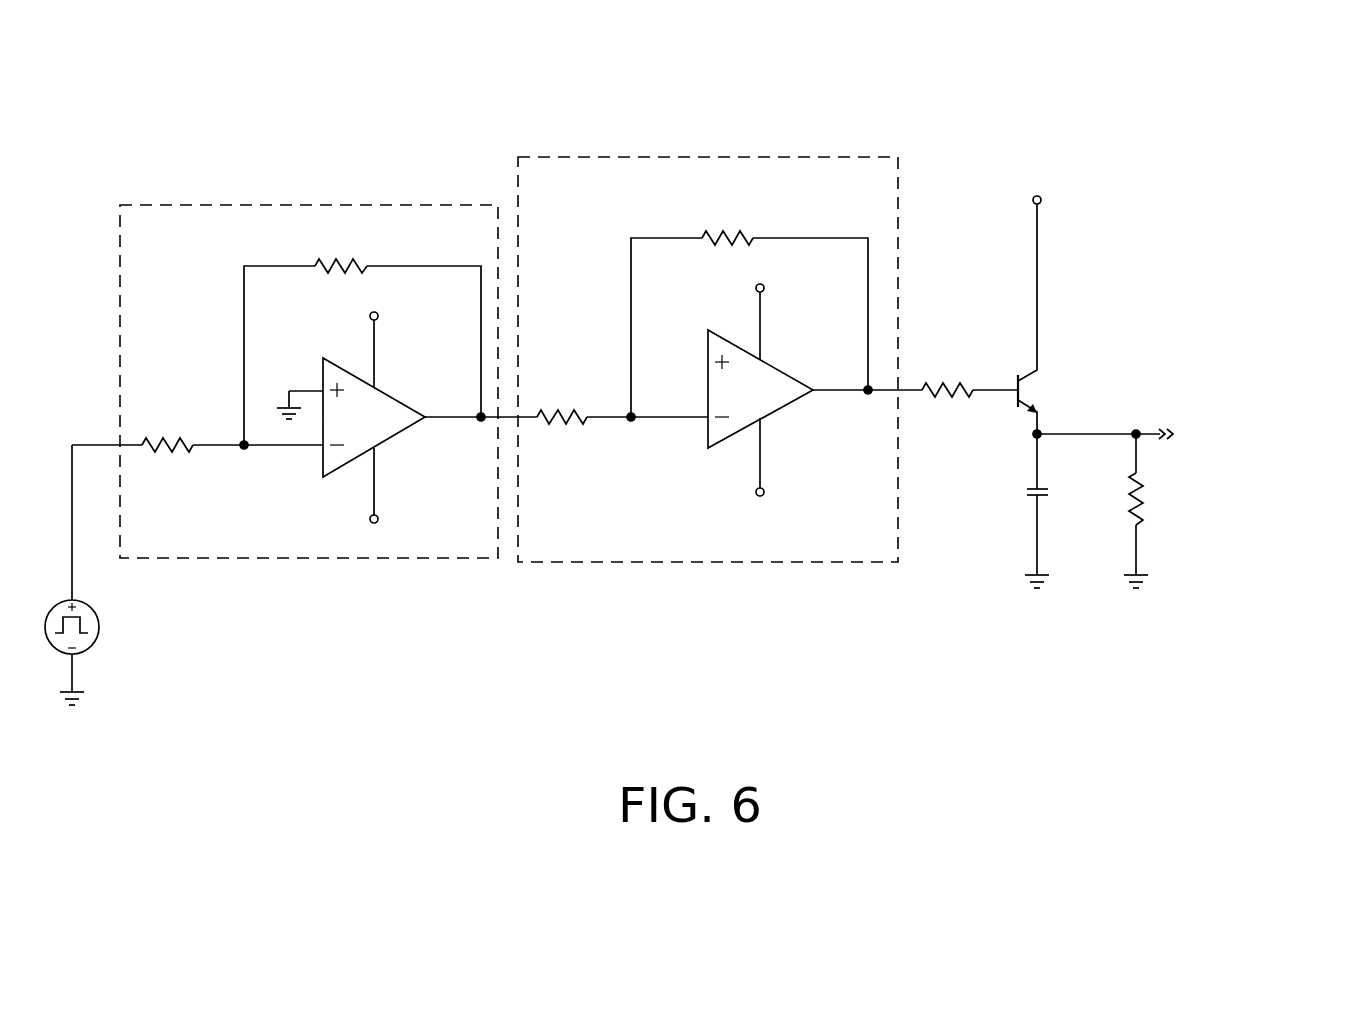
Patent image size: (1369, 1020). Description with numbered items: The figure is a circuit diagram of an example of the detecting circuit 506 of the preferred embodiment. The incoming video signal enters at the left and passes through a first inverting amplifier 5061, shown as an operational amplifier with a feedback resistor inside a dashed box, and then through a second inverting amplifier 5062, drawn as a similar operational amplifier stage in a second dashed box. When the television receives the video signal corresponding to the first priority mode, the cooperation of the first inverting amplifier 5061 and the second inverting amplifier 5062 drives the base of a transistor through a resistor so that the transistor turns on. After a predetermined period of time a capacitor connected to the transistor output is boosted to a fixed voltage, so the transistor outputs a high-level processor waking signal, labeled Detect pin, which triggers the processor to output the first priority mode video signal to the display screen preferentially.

The detecting circuit 506 is at (185, 78).
The first inverting amplifier 5061 is at (320, 560).
The second inverting amplifier 5062 is at (718, 565).